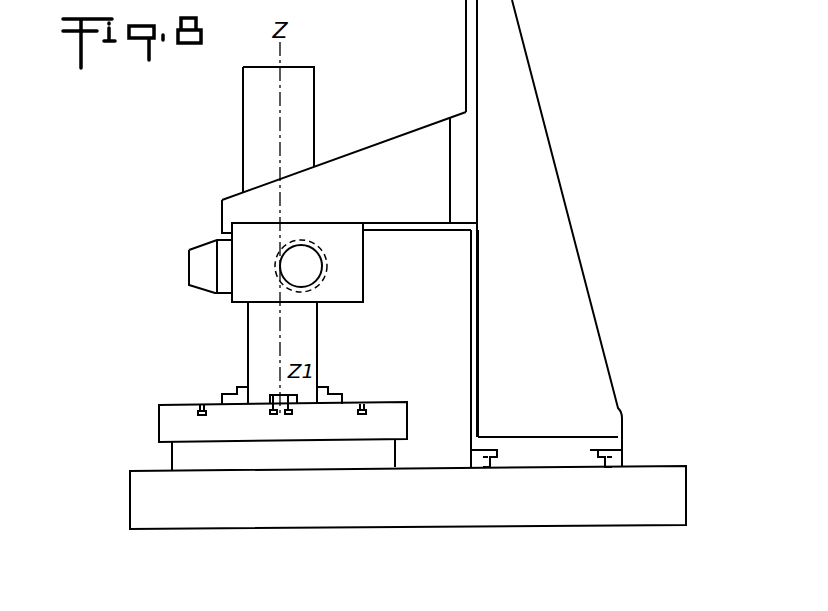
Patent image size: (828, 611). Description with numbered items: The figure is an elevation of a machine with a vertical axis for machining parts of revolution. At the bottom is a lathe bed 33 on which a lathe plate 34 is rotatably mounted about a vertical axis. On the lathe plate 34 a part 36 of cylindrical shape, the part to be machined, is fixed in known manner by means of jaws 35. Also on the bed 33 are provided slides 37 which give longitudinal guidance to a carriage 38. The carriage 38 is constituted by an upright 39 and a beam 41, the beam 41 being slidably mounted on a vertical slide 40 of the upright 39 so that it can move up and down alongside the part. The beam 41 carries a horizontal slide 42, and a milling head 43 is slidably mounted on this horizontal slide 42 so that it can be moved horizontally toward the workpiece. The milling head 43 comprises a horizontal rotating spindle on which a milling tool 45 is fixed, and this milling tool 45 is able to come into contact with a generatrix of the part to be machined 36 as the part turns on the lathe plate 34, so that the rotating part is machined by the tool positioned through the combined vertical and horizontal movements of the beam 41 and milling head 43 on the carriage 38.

The lathe bed 33 is at (157, 507).
The lathe plate 34 is at (178, 424).
The jaws 35 is at (330, 395).
The part to be machined 36 is at (263, 342).
The slides 37 is at (597, 453).
The carriage 38 is at (613, 347).
The upright 39 is at (510, 100).
The vertical slide 40 is at (473, 262).
The beam 41 is at (379, 165).
The horizontal slide 42 is at (422, 232).
The milling head 43 is at (243, 262).
The milling tool 45 is at (323, 278).